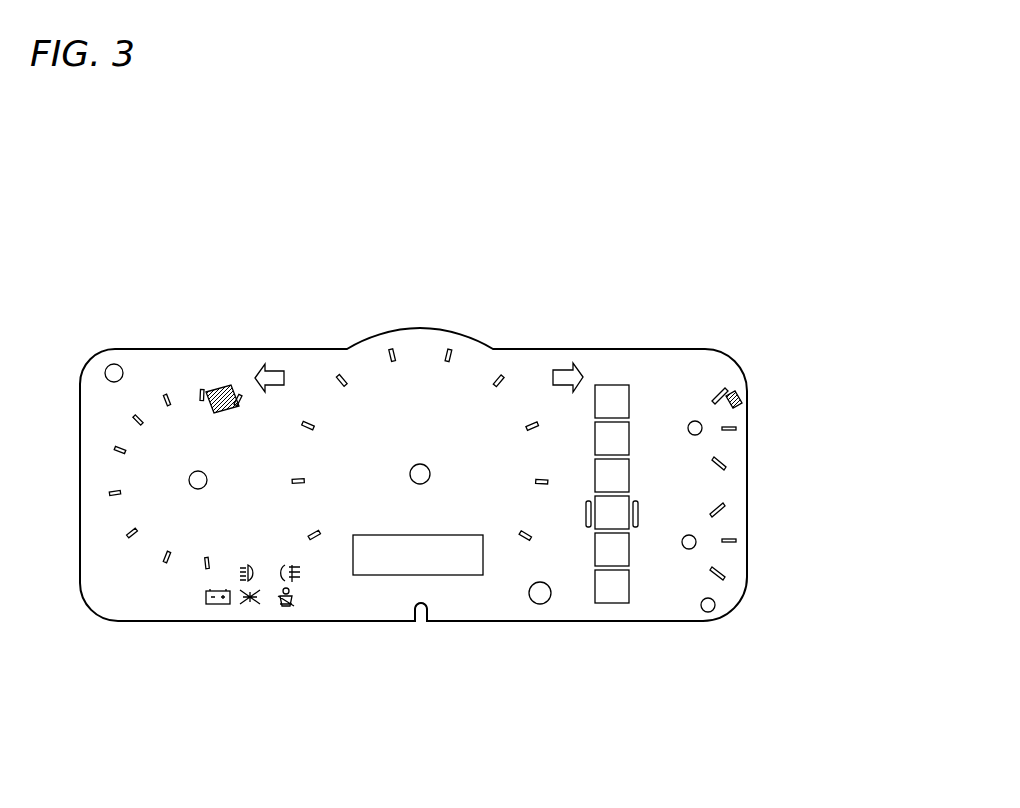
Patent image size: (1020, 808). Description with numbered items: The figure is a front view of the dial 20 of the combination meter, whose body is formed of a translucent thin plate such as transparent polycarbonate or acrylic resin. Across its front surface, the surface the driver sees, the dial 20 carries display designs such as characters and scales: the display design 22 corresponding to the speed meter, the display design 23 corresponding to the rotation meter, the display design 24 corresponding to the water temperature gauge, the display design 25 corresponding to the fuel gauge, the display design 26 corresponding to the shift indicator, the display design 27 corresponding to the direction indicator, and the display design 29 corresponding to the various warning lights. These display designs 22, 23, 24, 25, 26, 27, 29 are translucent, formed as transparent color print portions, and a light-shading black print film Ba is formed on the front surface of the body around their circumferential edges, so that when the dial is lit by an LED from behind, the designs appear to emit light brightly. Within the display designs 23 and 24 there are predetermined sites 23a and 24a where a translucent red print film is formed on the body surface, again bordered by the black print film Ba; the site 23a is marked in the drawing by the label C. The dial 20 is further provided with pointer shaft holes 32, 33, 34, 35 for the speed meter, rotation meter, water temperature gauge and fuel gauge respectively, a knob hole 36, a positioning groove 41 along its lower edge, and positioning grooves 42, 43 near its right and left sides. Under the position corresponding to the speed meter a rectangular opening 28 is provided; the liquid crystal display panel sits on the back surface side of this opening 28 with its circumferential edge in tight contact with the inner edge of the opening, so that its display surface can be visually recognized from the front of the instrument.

The dial 20 is at (692, 349).
The display design 22 is at (458, 370).
The display design 23 is at (128, 533).
The predetermined site 23a is at (221, 390).
The display design 24 is at (734, 426).
The predetermined site 24a is at (738, 397).
The display design 25 is at (737, 544).
The display design 26 is at (617, 602).
The display design 27 is at (275, 376).
The rectangular opening 28 is at (450, 566).
The display design 29 is at (252, 606).
The pointer shaft hole 32 is at (416, 484).
The pointer shaft hole 33 is at (194, 489).
The pointer shaft hole 34 is at (701, 434).
The pointer shaft hole 35 is at (696, 548).
The knob hole 36 is at (541, 604).
The positioning groove 41 is at (419, 622).
The positioning groove 42 is at (716, 605).
The positioning groove 43 is at (113, 364).
The pointer C is at (207, 380).
The black print film Ba is at (610, 373).